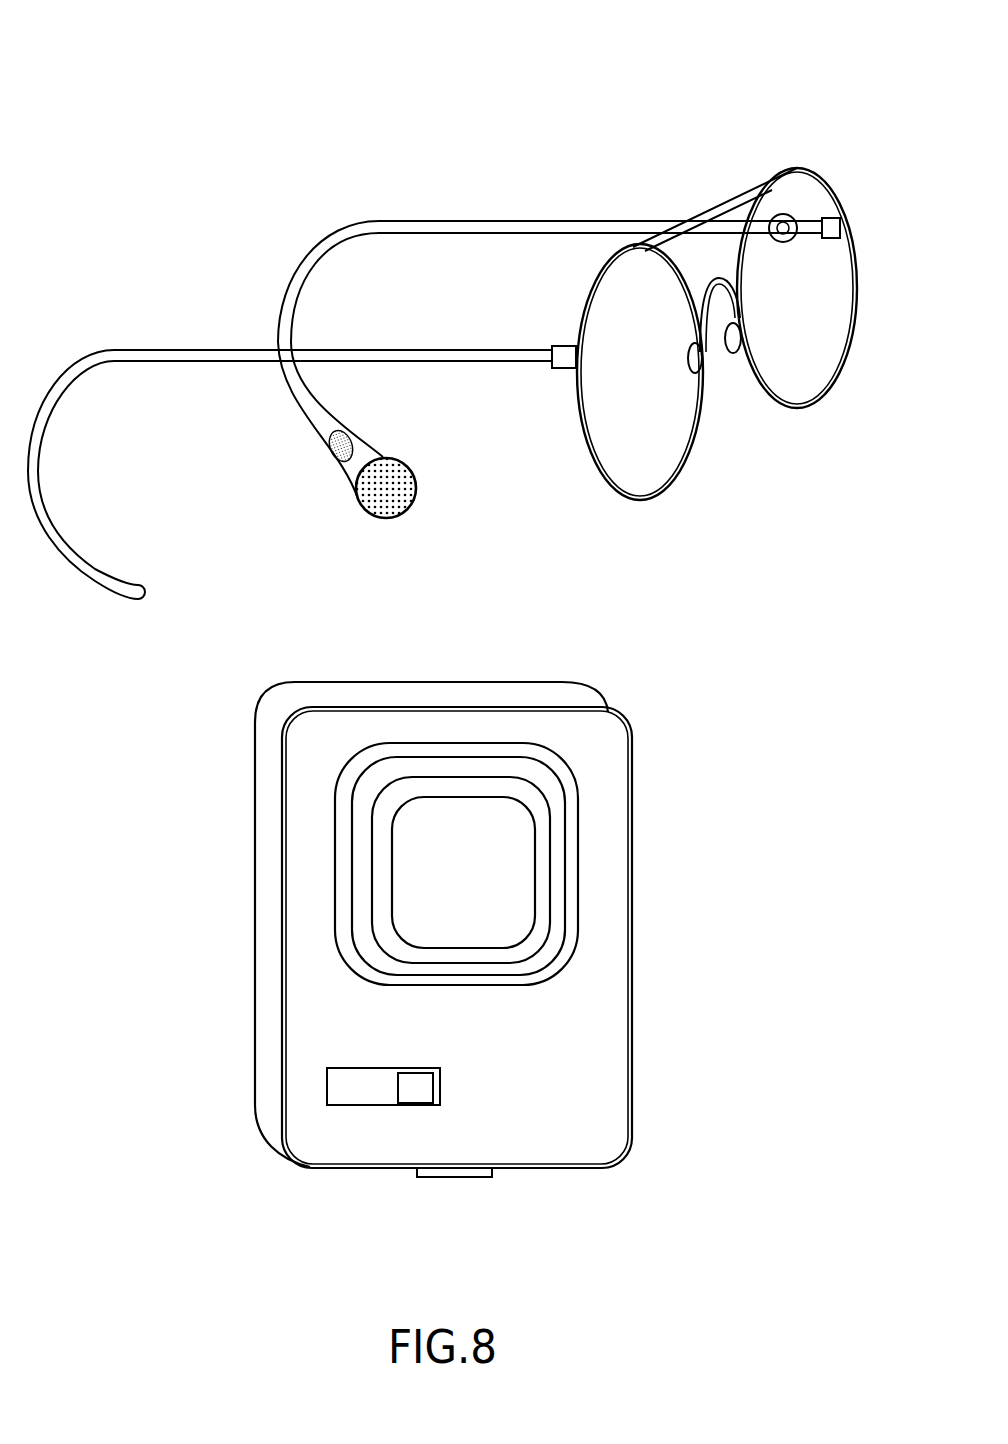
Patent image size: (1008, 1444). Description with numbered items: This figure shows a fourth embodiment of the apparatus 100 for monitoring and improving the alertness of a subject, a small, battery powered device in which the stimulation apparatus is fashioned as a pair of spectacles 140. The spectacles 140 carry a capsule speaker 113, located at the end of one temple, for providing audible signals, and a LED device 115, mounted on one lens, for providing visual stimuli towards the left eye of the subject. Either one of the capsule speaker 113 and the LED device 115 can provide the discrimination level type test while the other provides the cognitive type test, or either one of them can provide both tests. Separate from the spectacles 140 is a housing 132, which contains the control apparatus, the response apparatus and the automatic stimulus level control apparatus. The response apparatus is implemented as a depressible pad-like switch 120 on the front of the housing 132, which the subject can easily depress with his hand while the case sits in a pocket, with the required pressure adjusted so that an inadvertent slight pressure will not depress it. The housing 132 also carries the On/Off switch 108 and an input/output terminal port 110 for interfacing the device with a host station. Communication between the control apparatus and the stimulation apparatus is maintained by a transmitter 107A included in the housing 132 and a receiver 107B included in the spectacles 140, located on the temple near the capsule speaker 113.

The apparatus for monitoring and improving the alertness of a subject 100 is at (562, 80).
The spectacles 140 is at (405, 228).
The LED device 115 is at (783, 214).
The receiver 107B is at (335, 465).
The capsule speaker 113 is at (380, 505).
The transmitter 107A is at (503, 697).
The housing 132 is at (567, 722).
The pad-like switch 120 is at (382, 755).
The On/Off switch 108 is at (387, 1090).
The input/output terminal port 110 is at (441, 1178).